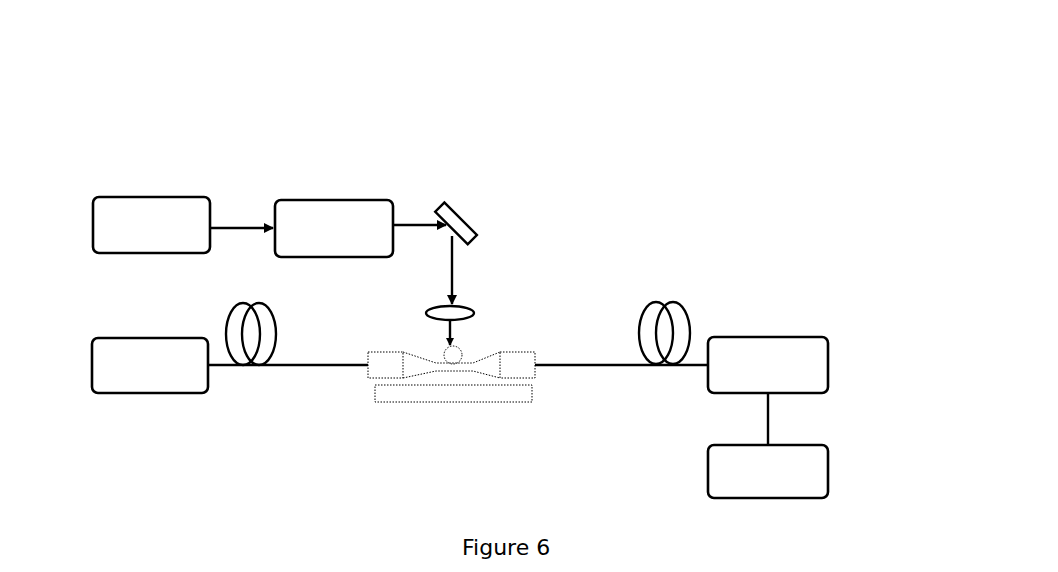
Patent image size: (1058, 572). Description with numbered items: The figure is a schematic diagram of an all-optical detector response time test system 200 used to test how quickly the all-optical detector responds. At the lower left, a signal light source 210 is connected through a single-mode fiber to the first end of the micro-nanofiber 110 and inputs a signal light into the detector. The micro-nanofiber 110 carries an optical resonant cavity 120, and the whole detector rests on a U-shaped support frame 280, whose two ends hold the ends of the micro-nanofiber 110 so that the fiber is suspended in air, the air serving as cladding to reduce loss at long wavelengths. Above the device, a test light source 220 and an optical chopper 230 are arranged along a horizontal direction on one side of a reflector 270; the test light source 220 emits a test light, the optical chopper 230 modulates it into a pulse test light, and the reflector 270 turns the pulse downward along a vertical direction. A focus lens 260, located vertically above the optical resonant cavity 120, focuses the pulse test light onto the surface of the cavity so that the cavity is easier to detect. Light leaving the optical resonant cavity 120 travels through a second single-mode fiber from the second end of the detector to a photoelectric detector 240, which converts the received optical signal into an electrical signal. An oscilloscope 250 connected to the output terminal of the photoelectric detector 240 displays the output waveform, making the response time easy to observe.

The all-optical detector response time test system 200 is at (470, 33).
The test light source 220 is at (167, 197).
The optical chopper 230 is at (335, 200).
The reflector 270 is at (468, 222).
The focus lens 260 is at (470, 300).
The optical resonant cavity 120 is at (460, 347).
The micro-nanofiber 110 is at (432, 372).
The support frame 280 is at (510, 393).
The signal light source 210 is at (163, 393).
The photoelectric detector 240 is at (795, 337).
The oscilloscope 250 is at (827, 443).